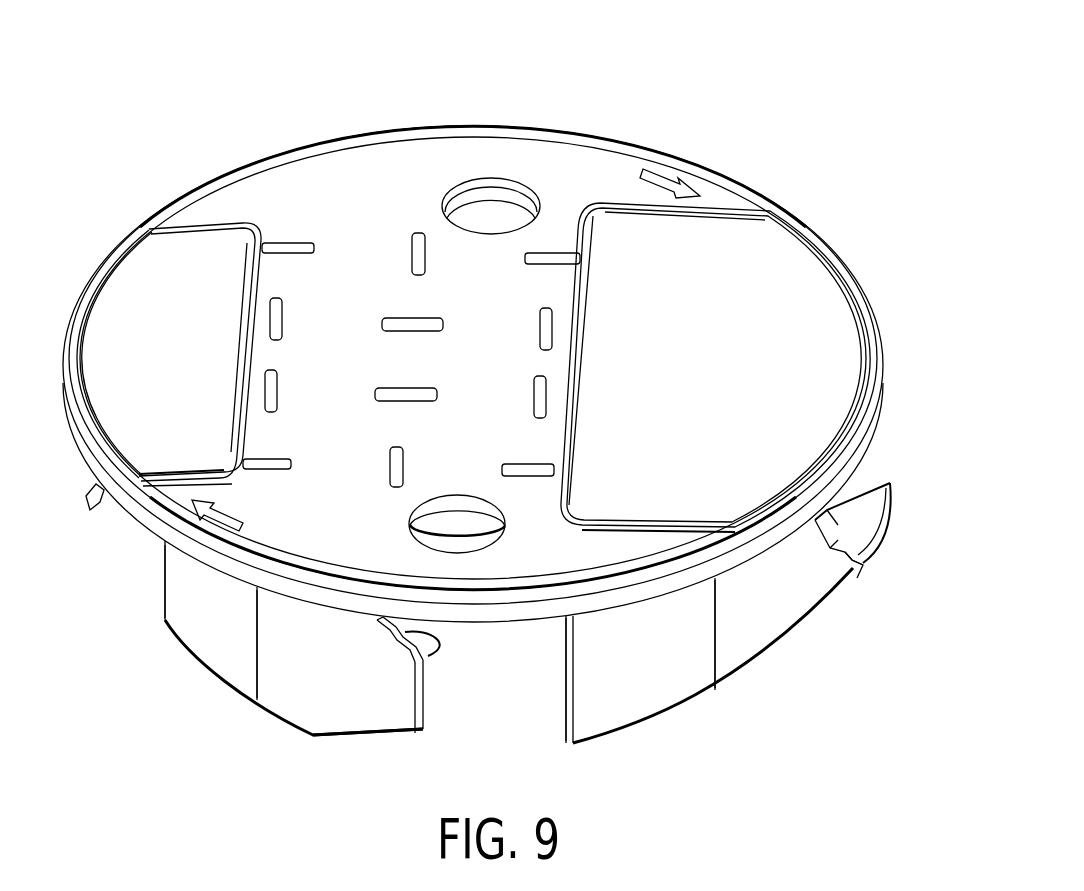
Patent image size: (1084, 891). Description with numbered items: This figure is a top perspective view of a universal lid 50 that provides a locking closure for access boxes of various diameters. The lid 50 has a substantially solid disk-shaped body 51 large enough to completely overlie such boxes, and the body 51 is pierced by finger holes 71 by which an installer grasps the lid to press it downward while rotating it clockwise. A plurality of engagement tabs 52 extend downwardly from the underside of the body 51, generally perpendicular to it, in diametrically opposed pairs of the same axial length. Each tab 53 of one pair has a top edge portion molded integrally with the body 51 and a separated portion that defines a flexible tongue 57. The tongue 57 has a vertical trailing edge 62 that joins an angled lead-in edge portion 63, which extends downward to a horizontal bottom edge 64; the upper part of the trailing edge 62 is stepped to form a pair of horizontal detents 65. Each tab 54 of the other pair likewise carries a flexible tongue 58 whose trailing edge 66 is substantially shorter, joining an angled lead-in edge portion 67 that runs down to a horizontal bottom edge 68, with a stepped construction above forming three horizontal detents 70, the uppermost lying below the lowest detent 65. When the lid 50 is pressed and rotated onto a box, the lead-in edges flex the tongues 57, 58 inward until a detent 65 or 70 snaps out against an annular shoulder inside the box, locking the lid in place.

The universal lid 50 is at (637, 100).
The disk-shaped body 51 is at (808, 288).
The engagement tabs 52 is at (195, 665).
The tab 53 is at (197, 613).
The tab 54 is at (605, 700).
The flexible tongue 57 is at (308, 700).
The flexible tongue 58 is at (822, 577).
The vertical trailing edge 62 is at (425, 697).
The angled lead-in edge portion 63 is at (357, 737).
The horizontal bottom edge 64 is at (263, 713).
The horizontal detents 65 is at (431, 639).
The trailing edge 66 is at (862, 566).
The angled lead-in edge portion 67 is at (852, 580).
The horizontal bottom edge 68 is at (767, 660).
The horizontal detents 70 is at (863, 505).
The finger holes 71 is at (491, 183).